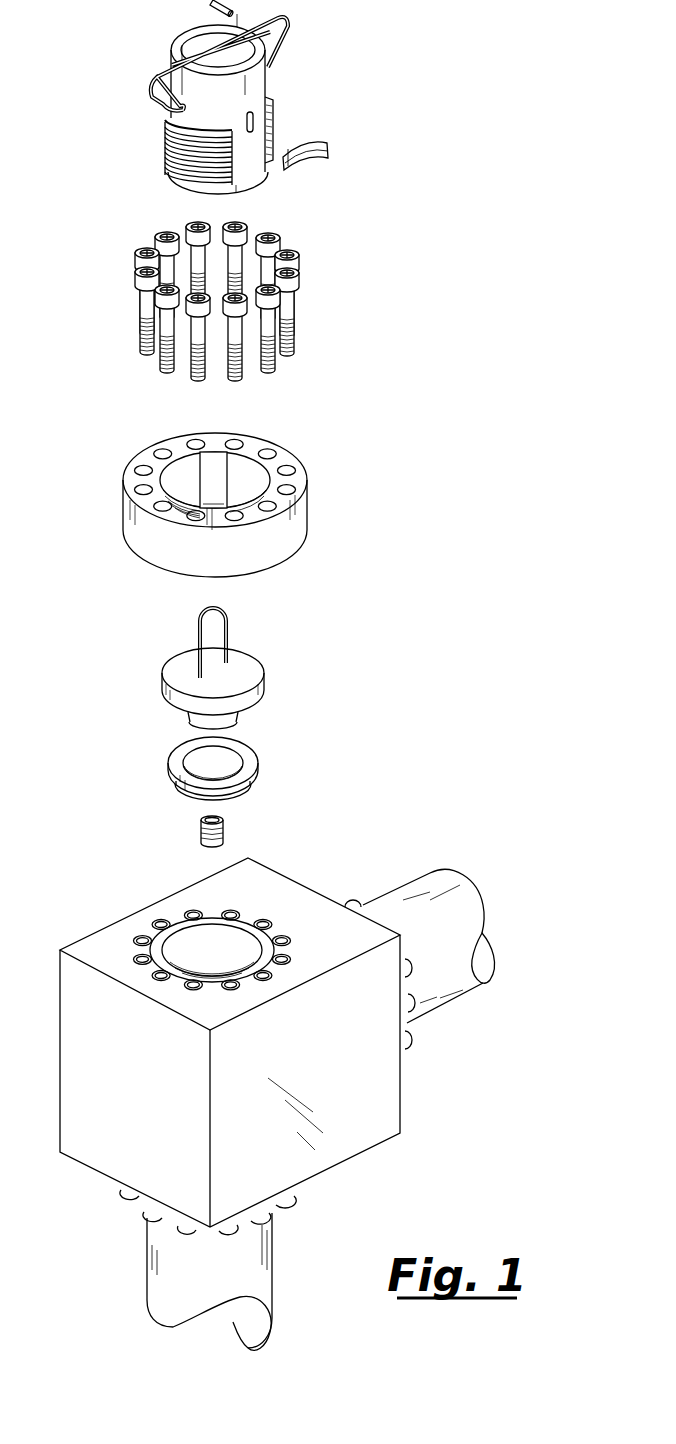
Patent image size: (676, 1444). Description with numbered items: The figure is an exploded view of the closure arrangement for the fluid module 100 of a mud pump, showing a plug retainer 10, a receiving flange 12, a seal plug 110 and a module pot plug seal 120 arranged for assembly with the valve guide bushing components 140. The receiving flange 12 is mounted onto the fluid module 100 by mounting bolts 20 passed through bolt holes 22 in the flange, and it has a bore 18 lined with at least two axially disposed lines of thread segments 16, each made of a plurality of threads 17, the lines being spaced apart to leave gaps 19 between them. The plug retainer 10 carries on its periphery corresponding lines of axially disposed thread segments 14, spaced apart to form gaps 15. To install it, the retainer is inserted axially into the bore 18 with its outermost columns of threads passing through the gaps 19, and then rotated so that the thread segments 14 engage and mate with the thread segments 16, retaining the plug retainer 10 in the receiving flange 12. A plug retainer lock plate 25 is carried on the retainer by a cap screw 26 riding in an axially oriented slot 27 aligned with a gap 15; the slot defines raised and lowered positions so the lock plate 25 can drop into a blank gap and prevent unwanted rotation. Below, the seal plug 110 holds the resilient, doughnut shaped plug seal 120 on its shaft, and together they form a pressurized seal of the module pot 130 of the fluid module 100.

The plug retainer 10 is at (227, 108).
The receiving flange 12 is at (216, 490).
The thread segments 14 is at (177, 142).
The gaps 15 is at (253, 160).
The thread segments 16 is at (182, 452).
The threads 17 is at (253, 472).
The bore 18 is at (213, 470).
The gaps 19 is at (240, 470).
The mounting bolts 20 is at (292, 291).
The bolt holes 22 is at (142, 488).
The plug retainer lock plate 25 is at (313, 165).
The cap screw 26 is at (212, 5).
The slot 27 is at (253, 120).
The fluid module 100 is at (276, 1077).
The seal plug 110 is at (177, 670).
The module pot plug seal 120 is at (248, 757).
The module pot 130 is at (202, 952).
The valve guide bushing components 140 is at (224, 838).